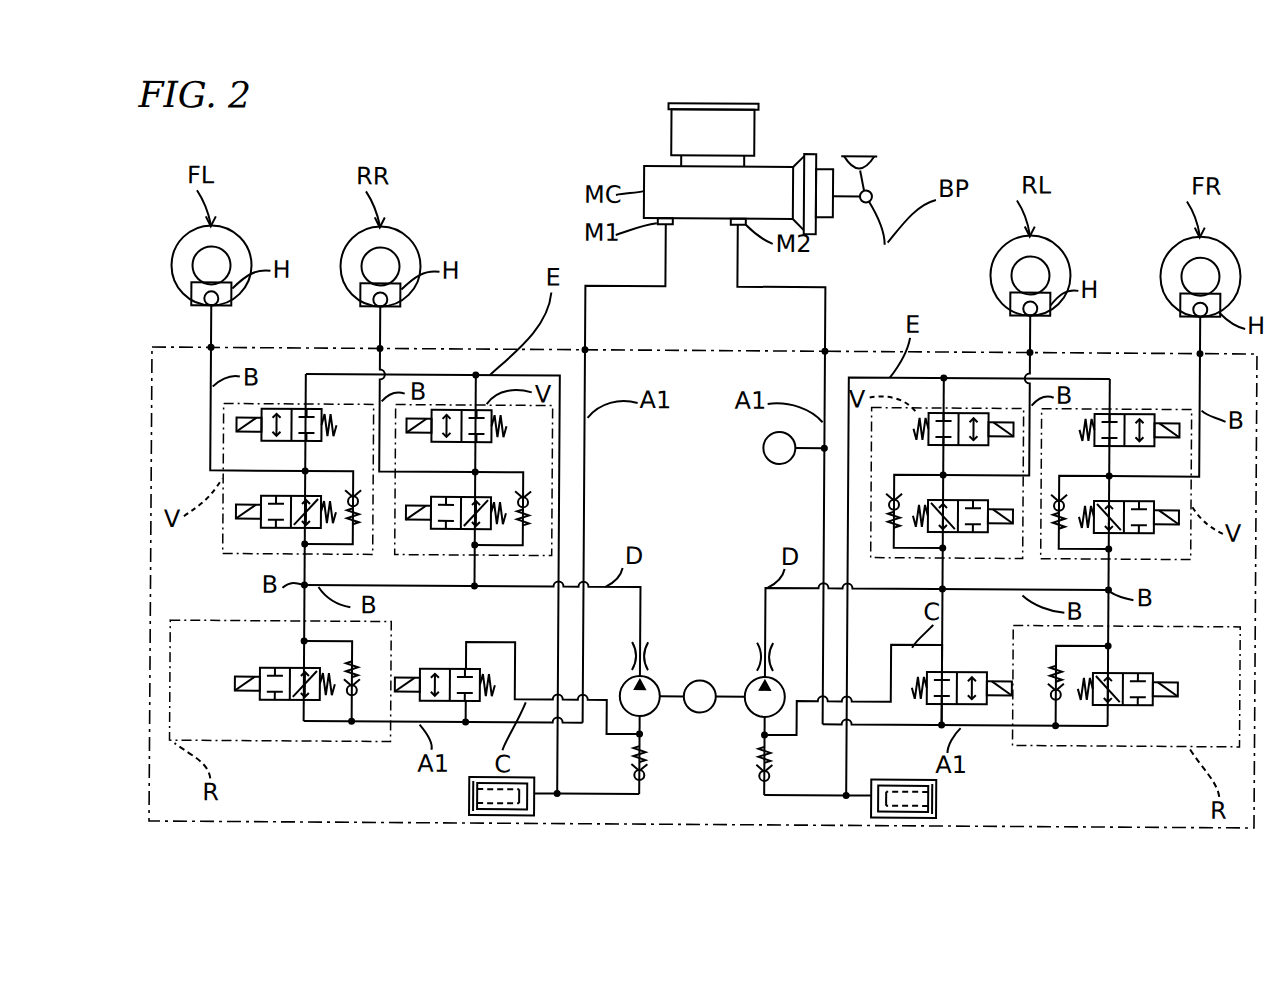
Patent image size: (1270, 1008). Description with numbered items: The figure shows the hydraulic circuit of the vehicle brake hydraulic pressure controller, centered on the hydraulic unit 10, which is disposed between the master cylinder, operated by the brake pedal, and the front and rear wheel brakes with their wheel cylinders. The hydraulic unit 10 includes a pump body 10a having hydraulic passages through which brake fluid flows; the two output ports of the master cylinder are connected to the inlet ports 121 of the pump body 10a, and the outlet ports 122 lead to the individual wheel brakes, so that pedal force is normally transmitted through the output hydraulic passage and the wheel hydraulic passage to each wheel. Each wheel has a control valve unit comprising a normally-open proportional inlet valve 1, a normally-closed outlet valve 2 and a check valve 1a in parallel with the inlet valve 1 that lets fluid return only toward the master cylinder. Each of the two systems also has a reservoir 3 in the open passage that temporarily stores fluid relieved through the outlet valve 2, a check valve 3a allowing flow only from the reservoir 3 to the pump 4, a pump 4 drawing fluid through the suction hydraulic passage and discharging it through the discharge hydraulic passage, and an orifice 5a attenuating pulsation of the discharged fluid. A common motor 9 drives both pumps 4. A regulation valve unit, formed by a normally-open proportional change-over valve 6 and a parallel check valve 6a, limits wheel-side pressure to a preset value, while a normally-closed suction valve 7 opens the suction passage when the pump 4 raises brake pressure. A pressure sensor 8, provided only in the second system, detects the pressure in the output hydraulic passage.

The inlet valve 1 is at (270, 527).
The check valve 1a is at (358, 498).
The outlet valve 2 is at (316, 407).
The reservoir 3 is at (462, 800).
The check valve 3a is at (650, 774).
The pump 4 is at (656, 709).
The orifice 5a is at (648, 655).
The change-over valve 6 is at (266, 700).
The check valve 6a is at (359, 686).
The suction valve 7 is at (428, 667).
The pressure sensor 8 is at (764, 444).
The motor 9 is at (702, 677).
The hydraulic unit 10 is at (888, 345).
The pump body 10a is at (300, 822).
The inlet port 121 is at (588, 335).
The outlet port 122 is at (214, 346).